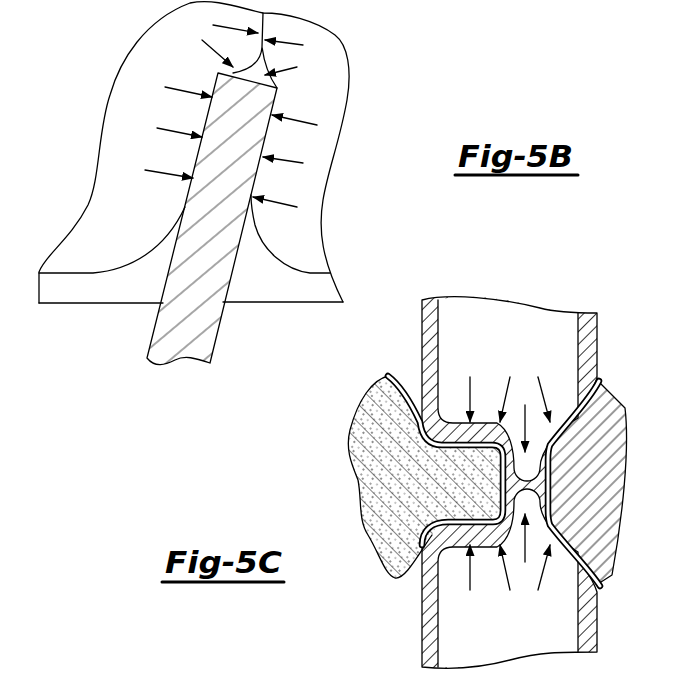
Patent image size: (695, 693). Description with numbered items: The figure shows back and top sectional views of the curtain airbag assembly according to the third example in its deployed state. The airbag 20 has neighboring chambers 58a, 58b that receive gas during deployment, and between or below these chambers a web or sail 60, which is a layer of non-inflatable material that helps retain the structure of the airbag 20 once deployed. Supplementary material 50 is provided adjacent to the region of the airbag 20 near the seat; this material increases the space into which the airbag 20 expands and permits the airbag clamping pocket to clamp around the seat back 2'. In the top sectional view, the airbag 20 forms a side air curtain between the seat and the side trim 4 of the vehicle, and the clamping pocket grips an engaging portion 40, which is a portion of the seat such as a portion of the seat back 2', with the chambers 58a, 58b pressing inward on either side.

In FIG. 5B, the airbag 20 is at (337, 236).
In FIG. 5C, the airbag 20 is at (563, 296).
In FIG. 5B, the seat back 2' is at (236, 219).
In FIG. 5C, the seat back 2' is at (405, 477).
In FIG. 5B, the supplementary material 50 is at (206, 123).
In FIG. 5C, the supplementary material 50 is at (390, 378).
In FIG. 5B, the chamber 58a is at (128, 238).
In FIG. 5C, the chamber 58a is at (520, 351).
In FIG. 5B, the chamber 58b is at (293, 237).
In FIG. 5C, the chamber 58b is at (520, 634).
In FIG. 5B, the sail 60 is at (270, 288).
In FIG. 5C, the side trim 4 is at (588, 433).
In FIG. 5C, the engaging portion 40 is at (485, 496).